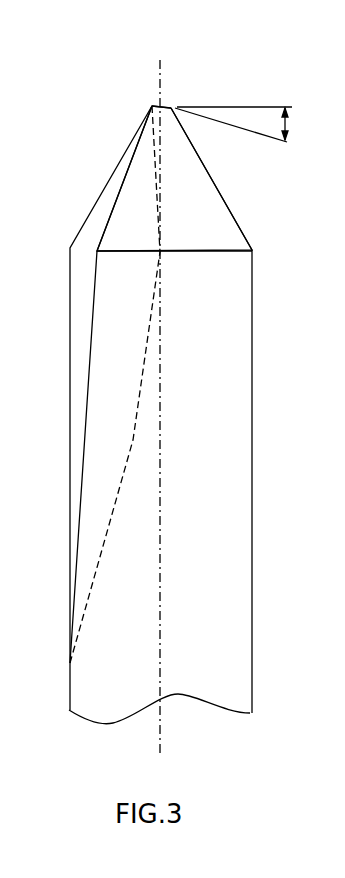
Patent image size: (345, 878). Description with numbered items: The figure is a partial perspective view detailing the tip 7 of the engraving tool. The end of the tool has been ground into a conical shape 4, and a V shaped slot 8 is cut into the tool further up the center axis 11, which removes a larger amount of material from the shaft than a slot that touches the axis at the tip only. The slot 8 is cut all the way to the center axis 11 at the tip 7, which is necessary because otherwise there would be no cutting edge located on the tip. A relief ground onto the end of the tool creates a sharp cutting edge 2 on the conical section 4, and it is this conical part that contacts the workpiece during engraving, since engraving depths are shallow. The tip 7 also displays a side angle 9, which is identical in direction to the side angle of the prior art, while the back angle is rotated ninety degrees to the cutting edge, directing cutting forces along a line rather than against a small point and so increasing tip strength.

The cutting edge 2 is at (110, 178).
The conical shape 4 is at (188, 179).
The tip 7 is at (152, 106).
The V shaped slot 8 is at (152, 320).
The side angle 9 is at (240, 124).
The center axis 11 is at (162, 70).